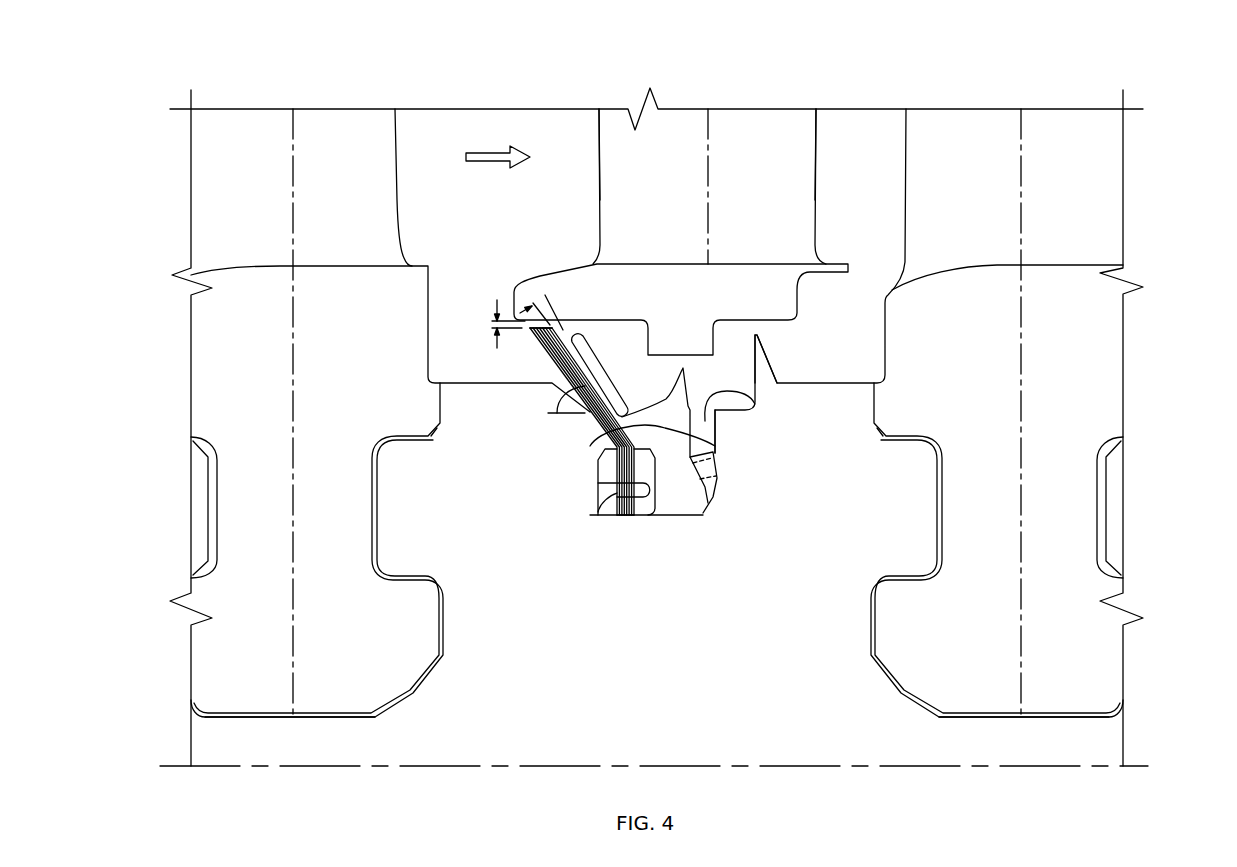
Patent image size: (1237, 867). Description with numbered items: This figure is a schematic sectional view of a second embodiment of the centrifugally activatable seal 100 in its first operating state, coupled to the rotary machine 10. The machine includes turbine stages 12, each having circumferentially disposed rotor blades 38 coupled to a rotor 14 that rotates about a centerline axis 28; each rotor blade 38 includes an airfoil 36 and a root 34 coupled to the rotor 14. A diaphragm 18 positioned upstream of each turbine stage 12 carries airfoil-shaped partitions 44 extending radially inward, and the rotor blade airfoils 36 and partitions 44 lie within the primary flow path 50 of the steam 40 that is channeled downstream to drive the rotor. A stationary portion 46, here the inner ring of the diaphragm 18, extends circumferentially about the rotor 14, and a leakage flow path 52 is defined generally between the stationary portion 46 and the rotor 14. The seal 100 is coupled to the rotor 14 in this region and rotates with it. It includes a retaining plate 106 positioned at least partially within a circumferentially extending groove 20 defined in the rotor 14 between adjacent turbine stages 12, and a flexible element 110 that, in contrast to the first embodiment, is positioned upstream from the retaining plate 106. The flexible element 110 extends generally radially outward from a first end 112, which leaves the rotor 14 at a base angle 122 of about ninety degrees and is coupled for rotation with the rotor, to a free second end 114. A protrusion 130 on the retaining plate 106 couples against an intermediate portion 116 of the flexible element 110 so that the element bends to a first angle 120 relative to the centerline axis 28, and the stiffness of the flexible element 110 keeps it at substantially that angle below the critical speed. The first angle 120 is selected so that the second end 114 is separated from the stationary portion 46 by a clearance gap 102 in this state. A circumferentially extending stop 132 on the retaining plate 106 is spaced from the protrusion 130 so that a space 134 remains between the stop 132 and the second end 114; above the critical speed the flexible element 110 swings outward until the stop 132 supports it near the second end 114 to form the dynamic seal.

The rotary machine 10 is at (1158, 130).
The turbine stage 12 is at (276, 727).
The rotor 14 is at (653, 651).
The diaphragm 18 is at (627, 140).
The groove 20 is at (742, 397).
The centerline axis 28 is at (1134, 766).
The root 34 is at (346, 519).
The airfoil 36 is at (356, 189).
The rotor blade 38 is at (218, 185).
The steam 40 is at (487, 150).
The partition 44 is at (771, 187).
The stationary portion 46 is at (718, 292).
The primary flow path 50 is at (853, 150).
The leakage flow path 52 is at (783, 338).
The centrifugally activatable seal 100 is at (613, 523).
The clearance gap 102 is at (497, 312).
The retaining plate 106 is at (705, 494).
The flexible element 110 is at (549, 451).
The first end 112 is at (638, 522).
The second end 114 is at (530, 332).
The intermediate portion 116 is at (602, 445).
The first angle 120 is at (552, 400).
The base angle 122 is at (602, 512).
The protrusion 130 is at (692, 430).
The stop 132 is at (590, 358).
The space 134 is at (548, 298).